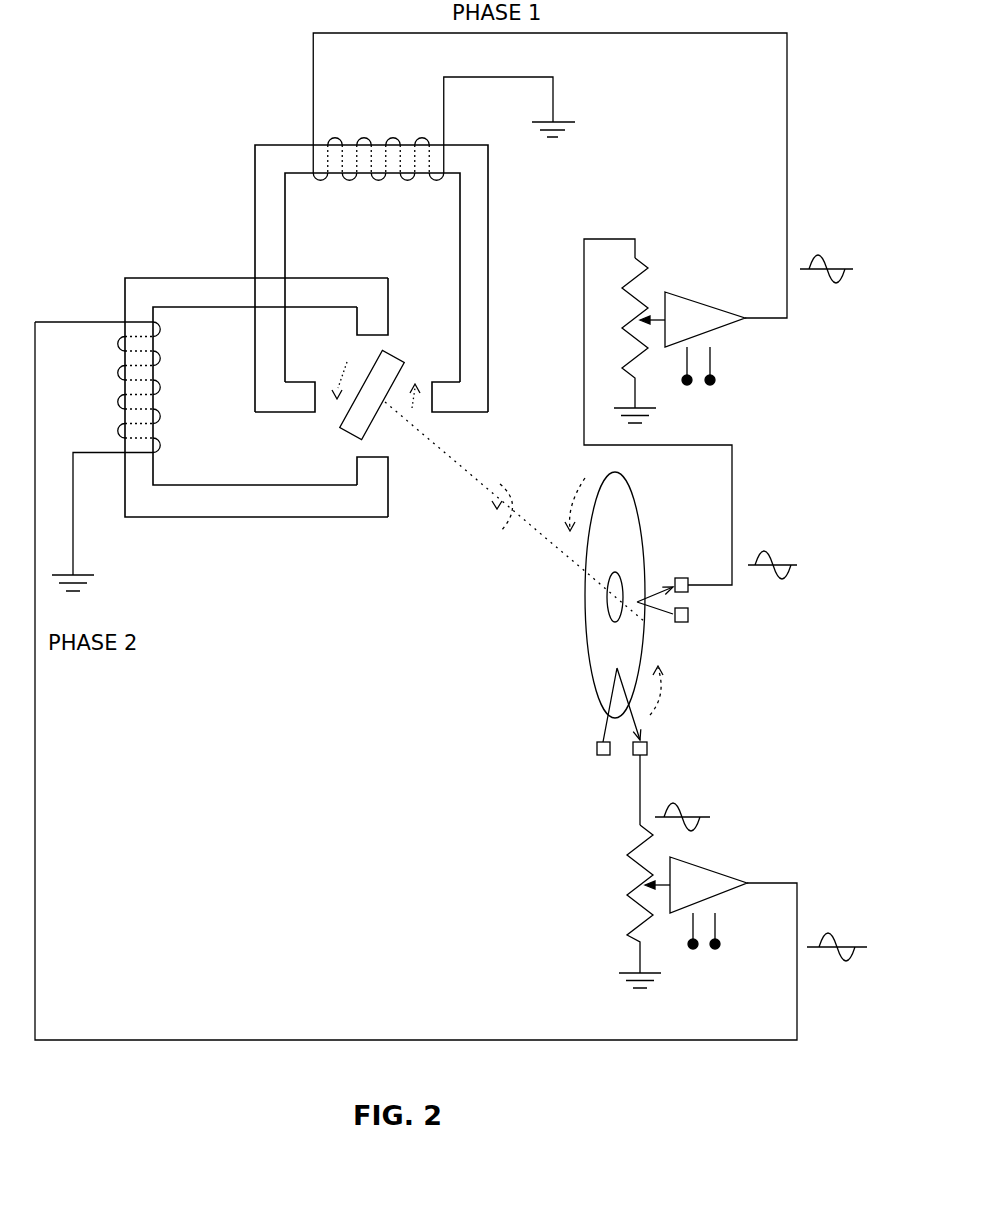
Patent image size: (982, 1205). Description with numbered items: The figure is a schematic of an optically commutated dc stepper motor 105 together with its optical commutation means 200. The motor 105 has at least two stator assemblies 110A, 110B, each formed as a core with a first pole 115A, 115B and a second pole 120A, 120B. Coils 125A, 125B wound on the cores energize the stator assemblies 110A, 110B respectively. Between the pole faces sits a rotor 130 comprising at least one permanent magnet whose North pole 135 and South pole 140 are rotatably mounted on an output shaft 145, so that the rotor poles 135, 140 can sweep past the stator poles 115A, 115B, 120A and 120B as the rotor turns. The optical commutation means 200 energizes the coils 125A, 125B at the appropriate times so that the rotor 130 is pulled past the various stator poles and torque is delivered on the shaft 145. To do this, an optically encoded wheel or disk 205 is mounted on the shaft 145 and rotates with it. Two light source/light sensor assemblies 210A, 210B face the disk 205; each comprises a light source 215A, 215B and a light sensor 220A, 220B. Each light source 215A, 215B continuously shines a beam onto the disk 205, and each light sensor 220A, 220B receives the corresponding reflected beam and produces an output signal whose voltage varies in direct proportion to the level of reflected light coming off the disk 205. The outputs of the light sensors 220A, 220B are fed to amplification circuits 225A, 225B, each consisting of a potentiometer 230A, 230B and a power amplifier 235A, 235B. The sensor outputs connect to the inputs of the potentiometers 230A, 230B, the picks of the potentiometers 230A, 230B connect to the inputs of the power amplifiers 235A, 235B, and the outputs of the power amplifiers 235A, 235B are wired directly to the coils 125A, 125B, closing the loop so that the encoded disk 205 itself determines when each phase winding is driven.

The optically commutated dc motor 105 is at (292, 678).
The stator assembly 110A is at (490, 236).
The stator assembly 110B is at (262, 516).
The first pole 115A is at (443, 398).
The first pole 115B is at (378, 470).
The second pole 120A is at (303, 400).
The second pole 120B is at (381, 326).
The coil 125A is at (376, 183).
The coil 125B is at (160, 420).
The rotor 130 is at (402, 378).
The North pole 135 is at (355, 432).
The South pole 140 is at (378, 359).
The output shaft 145 is at (543, 540).
The optical commutation means 200 is at (522, 693).
The optically encoded disk 205 is at (636, 496).
The light source/light sensor assembly 210A is at (720, 602).
The light source/light sensor assembly 210B is at (613, 790).
The light source 215A is at (683, 624).
The light source 215B is at (603, 756).
The light sensor 220A is at (684, 578).
The light sensor 220B is at (648, 750).
The amplification circuit 225A is at (734, 357).
The amplification circuit 225B is at (705, 976).
The potentiometer 230A is at (640, 277).
The potentiometer 230B is at (637, 924).
The power amplifier 235A is at (697, 297).
The power amplifier 235B is at (710, 868).